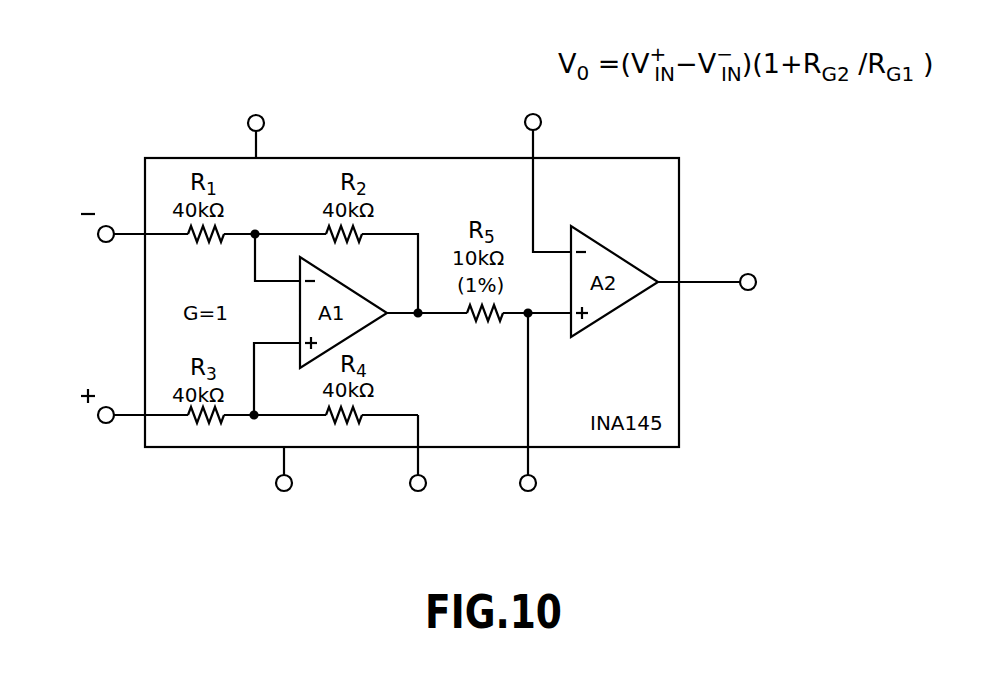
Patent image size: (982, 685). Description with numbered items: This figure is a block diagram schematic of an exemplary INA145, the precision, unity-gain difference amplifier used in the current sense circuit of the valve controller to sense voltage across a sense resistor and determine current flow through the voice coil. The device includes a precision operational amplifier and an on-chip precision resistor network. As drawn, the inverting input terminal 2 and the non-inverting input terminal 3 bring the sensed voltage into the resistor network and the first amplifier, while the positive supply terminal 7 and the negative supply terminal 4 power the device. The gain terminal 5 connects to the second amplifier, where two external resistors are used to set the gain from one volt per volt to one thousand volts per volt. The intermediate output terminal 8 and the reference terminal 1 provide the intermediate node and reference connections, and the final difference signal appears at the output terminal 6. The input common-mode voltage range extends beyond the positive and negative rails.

The reference (Ref) terminal pin 1 is at (419, 469).
The inverting input terminal pin (VIN-) 2 is at (122, 227).
The non-inverting input terminal pin (VIN+) 3 is at (122, 408).
The negative supply terminal pin (V-) 4 is at (289, 485).
The gain resistor terminal pin (RG) 5 is at (533, 183).
The output terminal pin (V0) 6 is at (723, 287).
The positive supply terminal pin (V+) 7 is at (260, 121).
The intermediate output terminal pin (V01) 8 is at (534, 420).